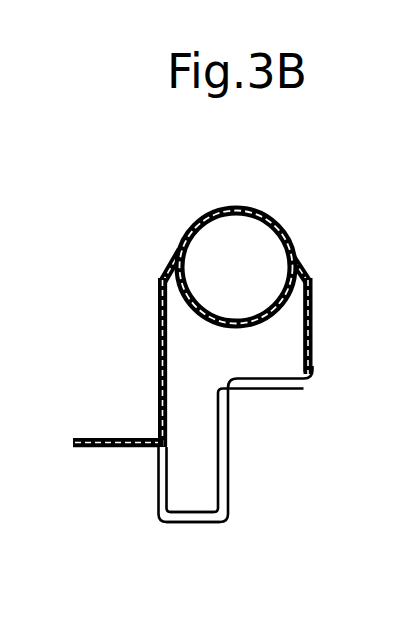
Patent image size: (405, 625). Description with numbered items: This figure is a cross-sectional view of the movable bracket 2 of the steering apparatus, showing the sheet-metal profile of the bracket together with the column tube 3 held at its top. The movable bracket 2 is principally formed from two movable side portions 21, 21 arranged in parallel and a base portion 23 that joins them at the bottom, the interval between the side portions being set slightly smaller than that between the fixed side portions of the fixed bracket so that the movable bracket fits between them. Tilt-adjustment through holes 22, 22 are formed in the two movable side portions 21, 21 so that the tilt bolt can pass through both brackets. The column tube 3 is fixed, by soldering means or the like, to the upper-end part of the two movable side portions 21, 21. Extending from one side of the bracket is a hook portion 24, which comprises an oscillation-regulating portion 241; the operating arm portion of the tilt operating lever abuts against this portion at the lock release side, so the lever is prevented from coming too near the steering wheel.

The movable bracket 2 is at (156, 402).
The column tube 3 is at (278, 219).
The movable side portion 21 is at (158, 323).
The tilt-adjustment through hole 22 is at (167, 345).
The base portion 23 is at (213, 523).
The hook portion 24 is at (98, 448).
The oscillation-regulating portion 241 is at (135, 448).